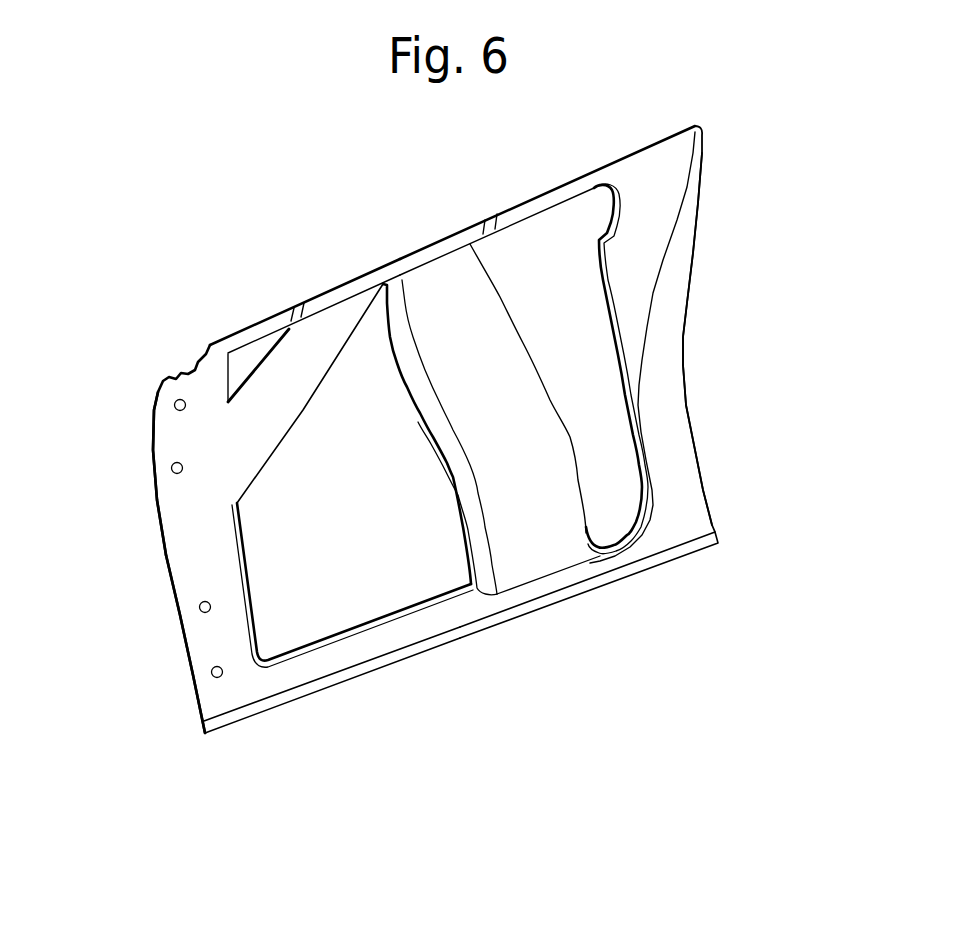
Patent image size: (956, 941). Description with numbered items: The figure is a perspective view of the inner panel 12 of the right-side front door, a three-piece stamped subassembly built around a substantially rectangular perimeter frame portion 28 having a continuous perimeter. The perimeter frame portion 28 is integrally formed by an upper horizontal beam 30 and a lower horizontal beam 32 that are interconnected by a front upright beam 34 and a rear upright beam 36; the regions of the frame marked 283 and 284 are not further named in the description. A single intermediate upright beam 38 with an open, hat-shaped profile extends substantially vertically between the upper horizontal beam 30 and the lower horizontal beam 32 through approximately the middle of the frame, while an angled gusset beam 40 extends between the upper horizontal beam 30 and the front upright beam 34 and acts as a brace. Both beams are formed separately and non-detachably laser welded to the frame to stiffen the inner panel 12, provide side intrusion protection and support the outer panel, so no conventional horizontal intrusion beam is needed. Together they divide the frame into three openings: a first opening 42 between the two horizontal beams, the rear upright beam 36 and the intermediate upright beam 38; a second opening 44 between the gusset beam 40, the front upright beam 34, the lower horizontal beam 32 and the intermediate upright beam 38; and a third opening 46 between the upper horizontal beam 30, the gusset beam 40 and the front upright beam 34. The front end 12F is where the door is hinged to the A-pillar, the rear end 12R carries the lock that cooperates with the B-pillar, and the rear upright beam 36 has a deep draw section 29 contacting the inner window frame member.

The inner panel 12 is at (257, 221).
The front end 12F is at (161, 530).
The rear end 12R is at (684, 333).
The perimeter frame portion 28 is at (288, 716).
The upper rail portion 283 is at (384, 280).
The lower rail portion 284 is at (575, 590).
The deep draw section 29 is at (700, 157).
The upper horizontal beam 30 is at (557, 187).
The lower horizontal beam 32 is at (433, 649).
The front upright beam 34 is at (192, 661).
The rear upright beam 36 is at (693, 434).
The intermediate upright beam 38 is at (447, 497).
The gusset beam 40 is at (293, 440).
The first opening 42 is at (563, 291).
The second opening 44 is at (339, 590).
The third opening 46 is at (249, 360).